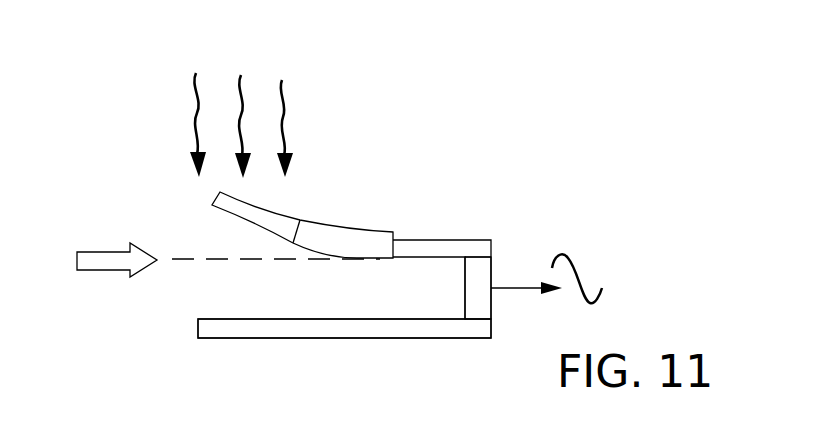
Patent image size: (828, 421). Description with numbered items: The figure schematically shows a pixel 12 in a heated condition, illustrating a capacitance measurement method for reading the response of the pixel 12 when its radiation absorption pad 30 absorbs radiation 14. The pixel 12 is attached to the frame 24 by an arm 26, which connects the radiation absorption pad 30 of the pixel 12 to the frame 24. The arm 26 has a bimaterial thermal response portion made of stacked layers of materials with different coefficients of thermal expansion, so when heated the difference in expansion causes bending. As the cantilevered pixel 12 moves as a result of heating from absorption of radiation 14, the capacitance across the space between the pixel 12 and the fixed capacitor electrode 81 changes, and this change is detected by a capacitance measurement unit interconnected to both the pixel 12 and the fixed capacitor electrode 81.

The pixel 12 is at (441, 116).
The radiation 14 is at (167, 108).
The frame 24 is at (480, 272).
The arm 26 is at (431, 211).
The radiation absorption pad 30 is at (350, 196).
The fixed capacitor electrode 81 is at (280, 328).